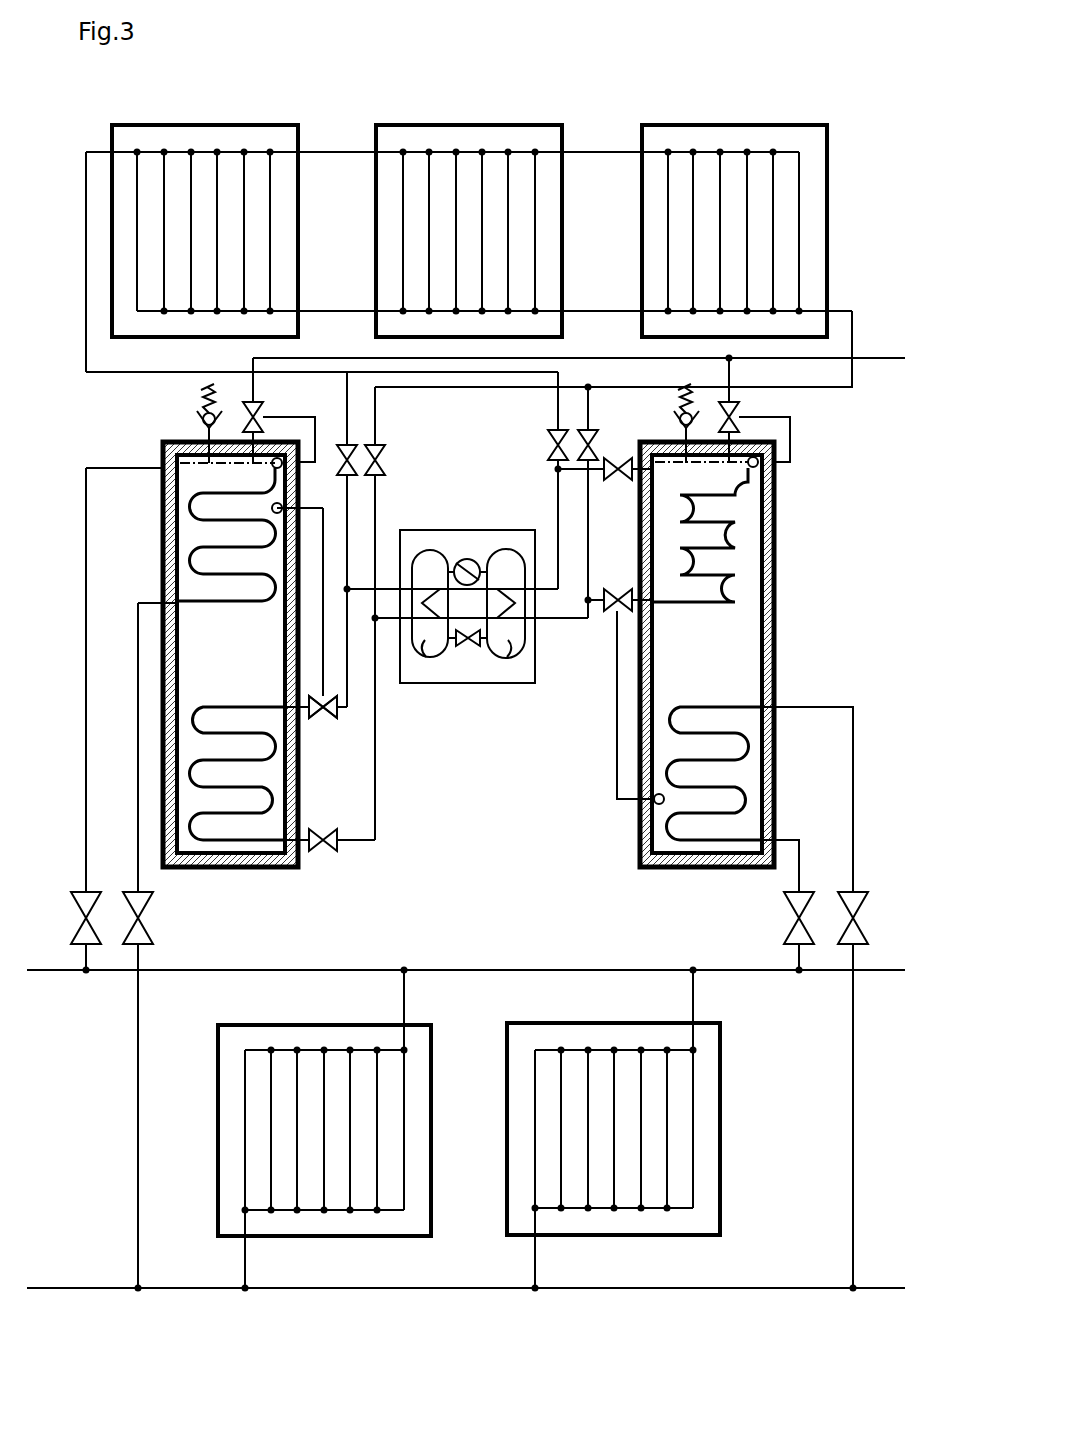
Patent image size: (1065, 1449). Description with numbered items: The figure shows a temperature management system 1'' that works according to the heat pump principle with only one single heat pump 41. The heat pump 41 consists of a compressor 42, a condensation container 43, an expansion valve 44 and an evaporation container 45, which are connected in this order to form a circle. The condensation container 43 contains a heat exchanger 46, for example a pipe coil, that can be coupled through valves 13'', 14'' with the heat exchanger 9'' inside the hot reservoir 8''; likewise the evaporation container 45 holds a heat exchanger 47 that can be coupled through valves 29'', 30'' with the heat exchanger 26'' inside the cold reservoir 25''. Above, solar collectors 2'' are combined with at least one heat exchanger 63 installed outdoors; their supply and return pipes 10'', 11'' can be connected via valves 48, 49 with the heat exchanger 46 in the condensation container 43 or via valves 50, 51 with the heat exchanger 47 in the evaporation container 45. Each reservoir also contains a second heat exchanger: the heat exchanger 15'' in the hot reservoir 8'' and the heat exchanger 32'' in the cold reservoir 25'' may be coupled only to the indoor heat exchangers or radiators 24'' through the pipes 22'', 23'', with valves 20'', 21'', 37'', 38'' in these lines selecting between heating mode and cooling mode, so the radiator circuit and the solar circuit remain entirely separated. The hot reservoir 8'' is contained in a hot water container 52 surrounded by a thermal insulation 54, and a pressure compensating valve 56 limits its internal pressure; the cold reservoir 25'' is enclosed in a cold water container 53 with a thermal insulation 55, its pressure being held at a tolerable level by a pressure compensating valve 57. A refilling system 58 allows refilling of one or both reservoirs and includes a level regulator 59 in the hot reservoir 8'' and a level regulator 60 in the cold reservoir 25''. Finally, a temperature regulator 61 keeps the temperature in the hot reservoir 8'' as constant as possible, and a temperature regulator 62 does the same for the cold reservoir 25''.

The temperature management system 1'' is at (667, 42).
The solar collector 2'' is at (602, 200).
The heat exchanger installed outdoors 63 is at (214, 150).
The return pipe 11'' is at (49, 262).
The supply pipe 10'' is at (760, 347).
The refilling system 58 is at (875, 358).
The level regulator 59 is at (295, 412).
The level regulator 60 is at (790, 456).
The pressure compensating valve 56 is at (200, 418).
The pressure compensating valve 57 is at (678, 418).
The valve 48 is at (340, 446).
The valve 49 is at (386, 458).
The valve 50 is at (549, 447).
The valve 51 is at (592, 428).
The valve 29'' is at (605, 498).
The valve 30'' is at (612, 630).
The temperature regulator 62 is at (617, 778).
The heat pump 41 is at (466, 610).
The compressor 42 is at (466, 559).
The condensation container 43 is at (425, 565).
The evaporation container 45 is at (505, 565).
The expansion valve 44 is at (460, 648).
The heat exchanger 46 is at (418, 655).
The heat exchanger 47 is at (514, 655).
The hot reservoir 8'' is at (210, 683).
The hot water container 52 is at (172, 502).
The thermal insulation 54 is at (172, 566).
The heat exchanger 15'' is at (226, 569).
The heat exchanger 9'' is at (238, 815).
The temperature regulator 61 is at (325, 670).
The valve 14'' is at (334, 739).
The valve 13'' is at (330, 876).
The valve 20'' is at (55, 719).
The valve 21'' is at (177, 945).
The cold reservoir 25'' is at (750, 654).
The cold water container 53 is at (765, 478).
The thermal insulation 55 is at (775, 512).
The heat exchanger 26'' is at (748, 535).
The heat exchanger 32'' is at (748, 773).
The valve 37'' is at (764, 905).
The valve 38'' is at (849, 997).
The pipe 22'' is at (467, 1009).
The pipe 23'' is at (466, 1322).
The indoor heat exchanger or radiator 24'' is at (469, 1163).